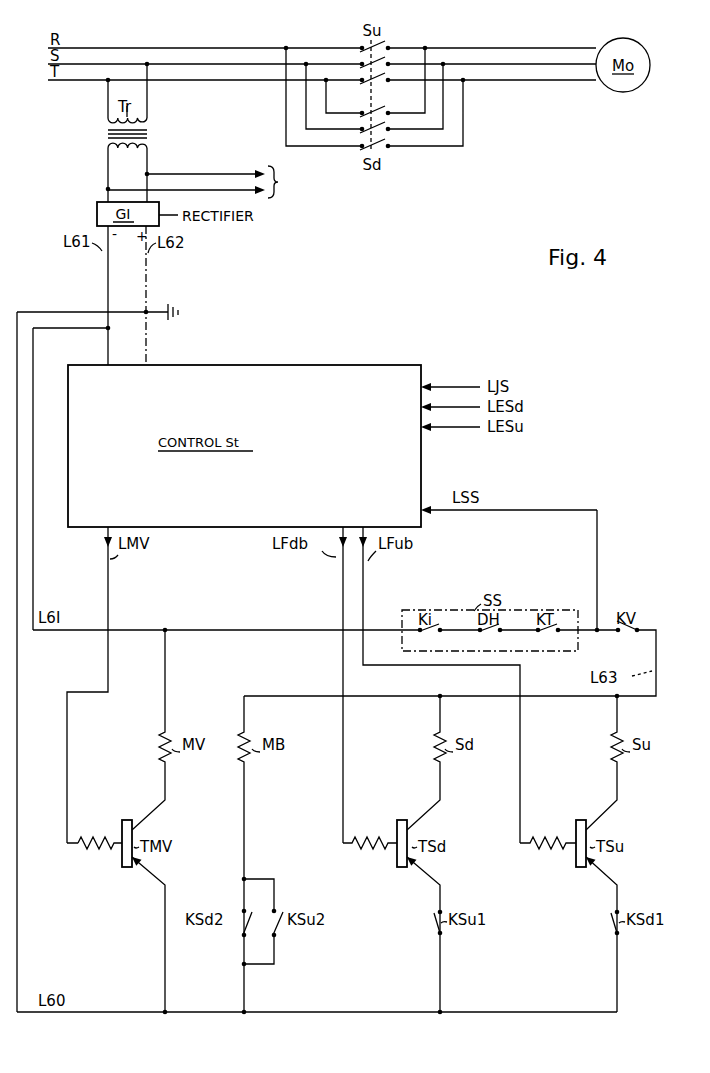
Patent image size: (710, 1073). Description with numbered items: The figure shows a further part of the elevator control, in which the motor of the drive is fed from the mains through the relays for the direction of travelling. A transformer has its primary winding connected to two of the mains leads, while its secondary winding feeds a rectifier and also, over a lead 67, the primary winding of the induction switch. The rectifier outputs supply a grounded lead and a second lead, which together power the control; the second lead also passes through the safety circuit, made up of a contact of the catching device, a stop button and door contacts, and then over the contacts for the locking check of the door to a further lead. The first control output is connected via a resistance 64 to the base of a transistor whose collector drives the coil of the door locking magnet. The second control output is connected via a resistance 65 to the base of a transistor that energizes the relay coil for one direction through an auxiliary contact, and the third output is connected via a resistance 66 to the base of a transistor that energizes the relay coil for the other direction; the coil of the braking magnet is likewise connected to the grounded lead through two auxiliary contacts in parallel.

The resistance 64 is at (95, 838).
The resistance 65 is at (370, 838).
The resistance 66 is at (550, 838).
The lead 67 is at (204, 185).